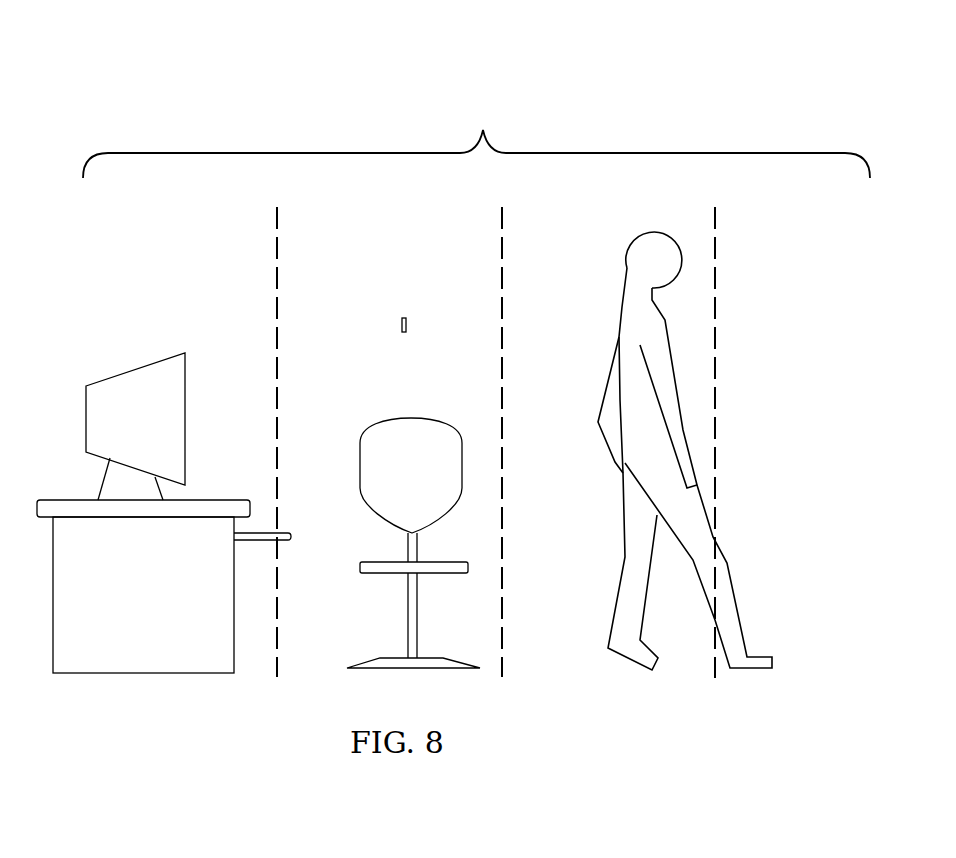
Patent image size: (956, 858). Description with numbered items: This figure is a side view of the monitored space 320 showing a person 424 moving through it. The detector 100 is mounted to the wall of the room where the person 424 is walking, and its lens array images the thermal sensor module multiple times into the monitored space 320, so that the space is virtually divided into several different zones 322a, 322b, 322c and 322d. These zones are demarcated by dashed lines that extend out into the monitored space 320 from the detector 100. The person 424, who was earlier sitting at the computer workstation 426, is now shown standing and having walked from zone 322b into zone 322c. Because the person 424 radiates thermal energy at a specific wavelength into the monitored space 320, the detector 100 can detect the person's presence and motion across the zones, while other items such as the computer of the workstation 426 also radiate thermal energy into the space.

The monitored space 320 is at (476, 128).
The zone 322a is at (192, 427).
The zone 322b is at (432, 425).
The zone 322c is at (650, 428).
The zone 322d is at (825, 185).
The computer workstation 426 is at (116, 333).
The detector 100 is at (407, 313).
The person 424 is at (652, 242).